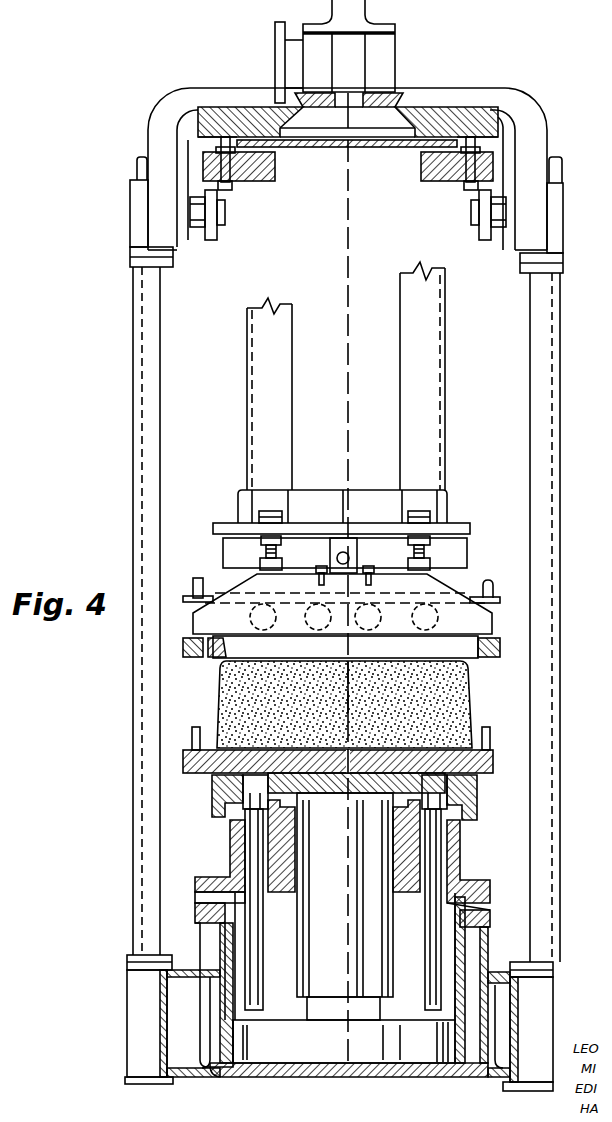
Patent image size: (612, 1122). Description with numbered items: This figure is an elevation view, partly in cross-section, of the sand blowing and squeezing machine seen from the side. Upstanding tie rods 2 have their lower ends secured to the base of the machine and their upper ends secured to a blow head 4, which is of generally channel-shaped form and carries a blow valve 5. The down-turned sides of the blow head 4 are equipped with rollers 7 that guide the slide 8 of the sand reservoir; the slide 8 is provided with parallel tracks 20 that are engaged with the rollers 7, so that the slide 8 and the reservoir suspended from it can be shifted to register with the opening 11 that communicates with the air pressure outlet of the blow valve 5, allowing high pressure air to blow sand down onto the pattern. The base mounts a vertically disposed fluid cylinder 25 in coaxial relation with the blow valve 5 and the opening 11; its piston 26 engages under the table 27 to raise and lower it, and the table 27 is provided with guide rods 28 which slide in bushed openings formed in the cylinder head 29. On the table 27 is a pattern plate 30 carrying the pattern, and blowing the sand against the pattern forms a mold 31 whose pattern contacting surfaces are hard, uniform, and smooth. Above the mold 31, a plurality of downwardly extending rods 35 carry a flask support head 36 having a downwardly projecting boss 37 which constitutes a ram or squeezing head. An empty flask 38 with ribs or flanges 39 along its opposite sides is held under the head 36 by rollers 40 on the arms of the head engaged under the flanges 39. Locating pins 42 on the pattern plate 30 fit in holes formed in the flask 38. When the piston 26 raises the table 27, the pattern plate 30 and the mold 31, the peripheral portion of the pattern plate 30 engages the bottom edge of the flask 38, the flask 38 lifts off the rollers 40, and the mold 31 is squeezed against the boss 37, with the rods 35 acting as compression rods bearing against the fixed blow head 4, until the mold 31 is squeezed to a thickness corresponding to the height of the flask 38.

The tie rods 2 is at (133, 681).
The blow head 4 is at (523, 105).
The blow valve 5 is at (385, 57).
The rollers 7 is at (211, 240).
The slide 8 is at (308, 165).
The opening 11 is at (410, 127).
The parallel tracks 20 is at (226, 185).
The fluid cylinder 25 is at (463, 953).
The piston 26 is at (368, 963).
The table 27 is at (477, 791).
The guide rods 28 is at (250, 845).
The cylinder head 29 is at (473, 883).
The pattern plate 30 is at (468, 766).
The mold 31 is at (450, 694).
The rods 35 is at (282, 405).
The flask support head 36 is at (448, 518).
The boss 37 is at (450, 558).
The flask 38 is at (493, 600).
The ribs or flanges 39 is at (341, 608).
The rollers 40 is at (318, 631).
The locating pins 42 is at (194, 727).